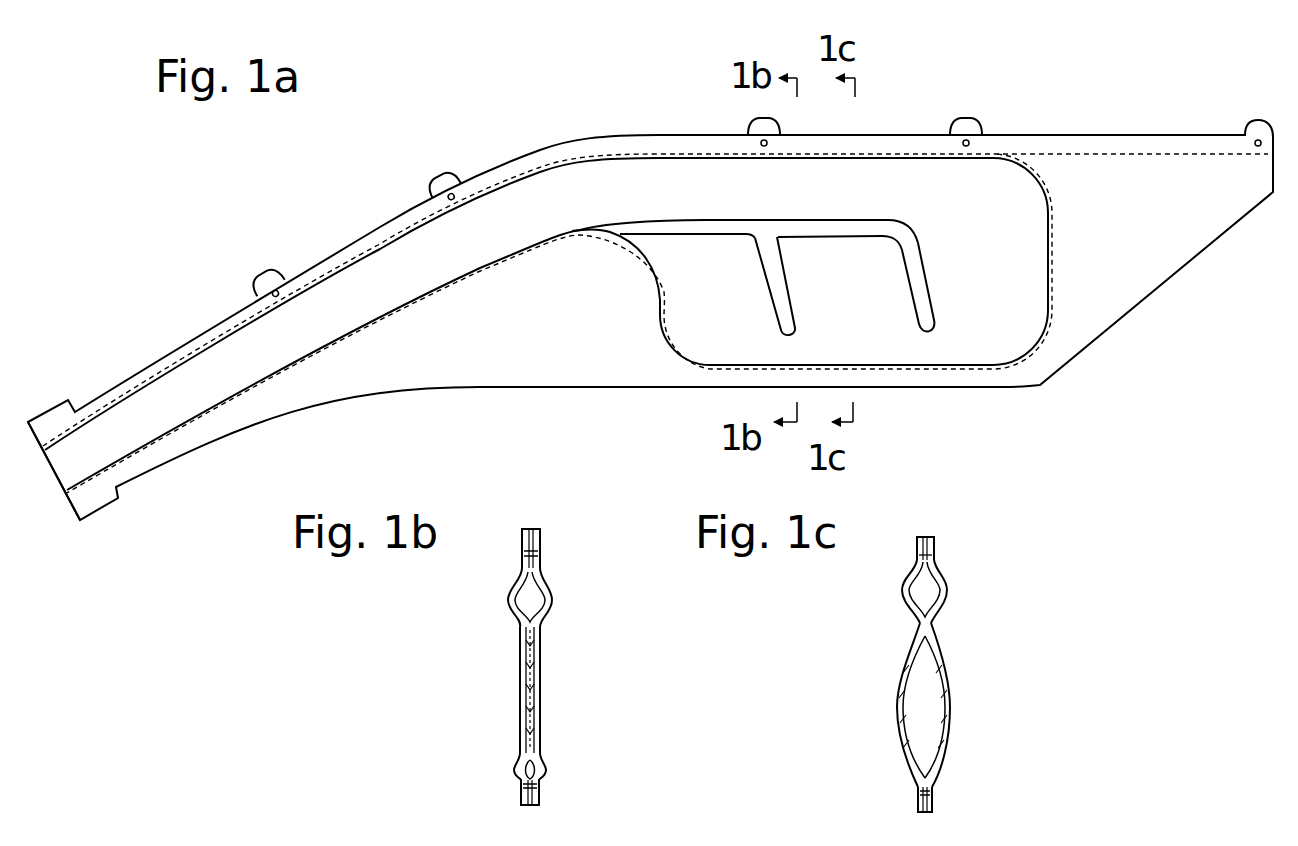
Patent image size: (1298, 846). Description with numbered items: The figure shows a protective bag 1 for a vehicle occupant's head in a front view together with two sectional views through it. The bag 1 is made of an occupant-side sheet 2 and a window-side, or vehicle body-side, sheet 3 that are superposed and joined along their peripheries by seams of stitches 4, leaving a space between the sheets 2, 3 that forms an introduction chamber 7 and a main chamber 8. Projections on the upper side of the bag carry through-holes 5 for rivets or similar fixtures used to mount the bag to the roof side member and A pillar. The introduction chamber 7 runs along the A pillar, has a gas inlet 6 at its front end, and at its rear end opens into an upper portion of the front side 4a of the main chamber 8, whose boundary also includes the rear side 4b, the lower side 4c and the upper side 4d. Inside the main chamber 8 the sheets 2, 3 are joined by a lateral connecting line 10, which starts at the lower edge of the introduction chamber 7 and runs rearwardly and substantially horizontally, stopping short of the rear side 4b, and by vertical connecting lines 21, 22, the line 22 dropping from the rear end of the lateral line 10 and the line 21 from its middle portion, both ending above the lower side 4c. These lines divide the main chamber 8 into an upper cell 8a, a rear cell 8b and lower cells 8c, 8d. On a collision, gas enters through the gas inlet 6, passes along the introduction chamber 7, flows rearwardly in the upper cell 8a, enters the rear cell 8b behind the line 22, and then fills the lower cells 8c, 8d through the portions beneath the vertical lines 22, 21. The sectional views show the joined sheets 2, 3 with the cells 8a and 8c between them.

In FIG. 1A, the bag 1 is at (637, 280).
In FIG. 1B, the bag 1 is at (537, 657).
In FIG. 1C, the bag 1 is at (928, 667).
In FIG. 1B, the occupant-side sheet 2 is at (520, 673).
In FIG. 1C, the occupant-side sheet 2 is at (900, 680).
In FIG. 1B, the window-side sheet 3 is at (541, 673).
In FIG. 1C, the window-side sheet 3 is at (948, 675).
In FIG. 1A, the stitches 4 is at (297, 372).
In FIG. 1B, the stitches 4 is at (548, 565).
In FIG. 1C, the stitches 4 is at (945, 556).
In FIG. 1A, the front side of the main chamber 4a is at (652, 283).
In FIG. 1A, the rear side of the main chamber 4b is at (1053, 282).
In FIG. 1A, the lower side of the main chamber 4c is at (960, 372).
In FIG. 1A, the upper side of the main chamber 4d is at (937, 150).
In FIG. 1A, the through-holes 5 is at (256, 286).
In FIG. 1B, the through-holes 5 is at (541, 543).
In FIG. 1A, the gas inlet 6 is at (60, 465).
In FIG. 1A, the introduction chamber 7 is at (400, 292).
In FIG. 1A, the main chamber 8 is at (597, 266).
In FIG. 1A, the upper cell 8a is at (903, 180).
In FIG. 1B, the upper cell 8a is at (520, 605).
In FIG. 1C, the upper cell 8a is at (920, 588).
In FIG. 1A, the rear cell 8b is at (1008, 250).
In FIG. 1A, the lower cell 8c is at (893, 345).
In FIG. 1C, the lower cell 8c is at (912, 705).
In FIG. 1A, the lower cell 8d is at (688, 335).
In FIG. 1A, the lateral connecting line 10 is at (790, 218).
In FIG. 1A, the vertical connecting line 21 is at (788, 295).
In FIG. 1A, the vertical connecting line 22 is at (933, 295).